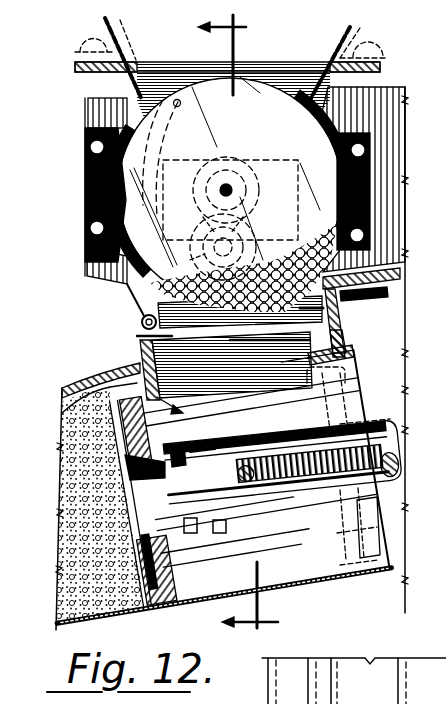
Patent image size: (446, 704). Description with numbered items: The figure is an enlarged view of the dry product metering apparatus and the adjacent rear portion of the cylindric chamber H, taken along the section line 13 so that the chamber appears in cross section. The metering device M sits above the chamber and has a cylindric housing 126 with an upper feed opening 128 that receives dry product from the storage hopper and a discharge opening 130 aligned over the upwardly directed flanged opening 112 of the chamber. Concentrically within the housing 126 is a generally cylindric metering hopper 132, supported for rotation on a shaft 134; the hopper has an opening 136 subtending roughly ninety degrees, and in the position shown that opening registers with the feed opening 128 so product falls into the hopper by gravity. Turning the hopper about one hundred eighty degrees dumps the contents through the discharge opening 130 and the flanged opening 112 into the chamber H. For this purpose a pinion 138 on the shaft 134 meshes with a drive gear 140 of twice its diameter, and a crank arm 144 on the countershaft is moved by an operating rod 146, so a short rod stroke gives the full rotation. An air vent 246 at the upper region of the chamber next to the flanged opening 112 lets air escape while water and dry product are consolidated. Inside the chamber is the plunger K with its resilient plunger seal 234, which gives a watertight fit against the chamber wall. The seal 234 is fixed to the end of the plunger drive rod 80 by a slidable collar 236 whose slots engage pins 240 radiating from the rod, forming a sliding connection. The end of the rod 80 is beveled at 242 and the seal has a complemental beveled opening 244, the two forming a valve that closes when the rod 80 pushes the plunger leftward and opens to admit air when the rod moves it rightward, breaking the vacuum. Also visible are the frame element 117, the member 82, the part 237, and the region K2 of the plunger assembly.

The section line 13- 13 is at (212, 330).
The upper feed opening 128 is at (318, 66).
The opening 136 is at (305, 110).
The cylindric housing 126 is at (328, 131).
The metering hopper 132 is at (326, 141).
The pinion 138 is at (230, 189).
The shaft 134 is at (233, 187).
The drive gear 140 is at (172, 158).
The crank arm 144 is at (240, 238).
The frame member 117 is at (142, 322).
The discharge opening 130 is at (168, 317).
The operating rod 146 is at (375, 300).
The air vent 246 is at (90, 392).
The flanged opening 112 is at (142, 357).
The pins 240 is at (221, 437).
The slidable collar 236 is at (230, 431).
The rack 82 is at (325, 428).
The beveled opening 244 is at (127, 492).
The beveled end 242 is at (224, 488).
The plunger drive rod 80 is at (340, 514).
The bracket 237 is at (280, 538).
The resilient plunger seal 234 is at (135, 568).
The plunger K is at (124, 548).
The chamber K2 is at (264, 476).
The cylindric chamber H is at (289, 596).
The metering device M is at (384, 82).